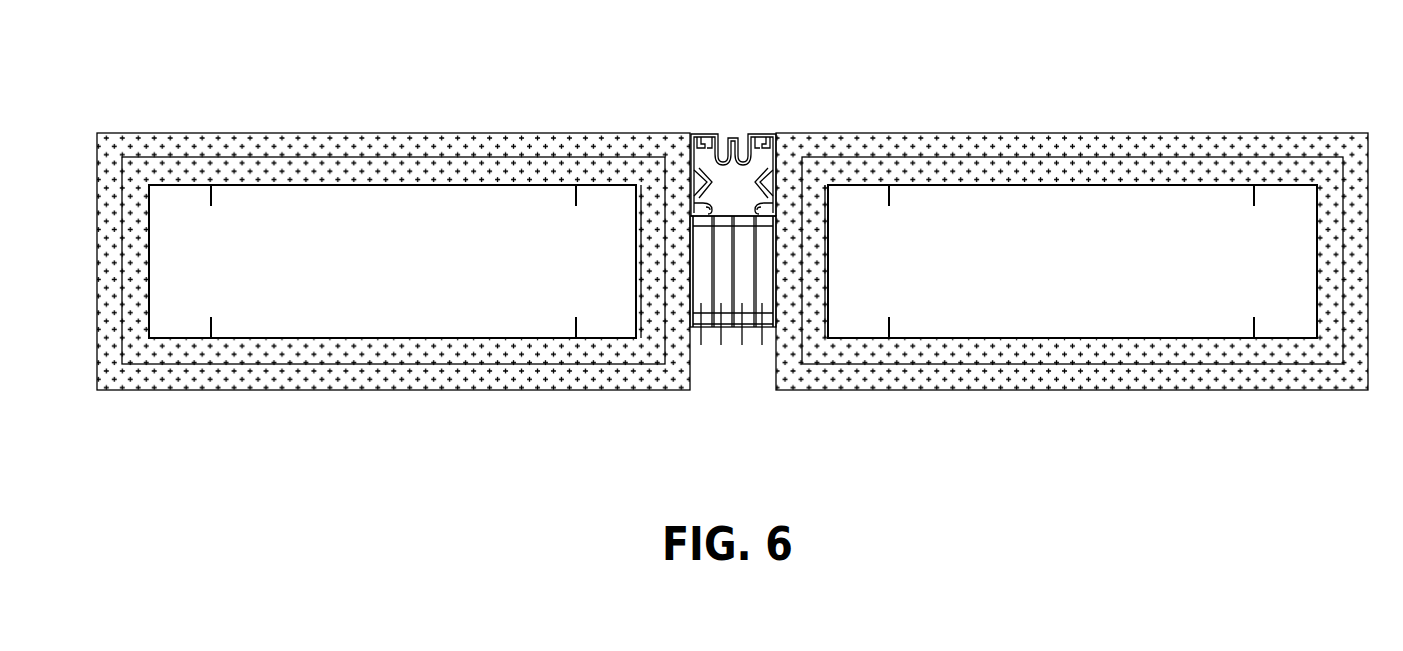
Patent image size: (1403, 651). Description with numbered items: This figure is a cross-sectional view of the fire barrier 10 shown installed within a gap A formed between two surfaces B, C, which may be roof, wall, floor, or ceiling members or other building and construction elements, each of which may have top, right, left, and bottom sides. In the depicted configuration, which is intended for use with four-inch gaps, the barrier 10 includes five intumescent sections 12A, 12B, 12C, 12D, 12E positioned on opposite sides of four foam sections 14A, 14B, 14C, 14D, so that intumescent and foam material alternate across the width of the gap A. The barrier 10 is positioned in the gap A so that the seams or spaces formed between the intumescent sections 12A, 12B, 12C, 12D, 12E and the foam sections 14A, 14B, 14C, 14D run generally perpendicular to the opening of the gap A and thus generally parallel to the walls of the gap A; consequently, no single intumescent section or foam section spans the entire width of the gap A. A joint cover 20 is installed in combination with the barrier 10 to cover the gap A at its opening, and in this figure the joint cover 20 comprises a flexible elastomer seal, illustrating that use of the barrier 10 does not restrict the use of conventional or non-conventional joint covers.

The fire barrier 10 is at (720, 272).
The joint cover 20 is at (743, 137).
The intumescent section 12A is at (693, 293).
The intumescent section 12B is at (711, 277).
The intumescent section 12C is at (733, 242).
The intumescent section 12D is at (755, 262).
The intumescent section 12E is at (775, 281).
The foam section 14A is at (701, 345).
The foam section 14B is at (720, 345).
The foam section 14C is at (743, 345).
The foam section 14D is at (765, 345).
The gap A is at (749, 131).
The surface B is at (375, 172).
The surface C is at (1052, 158).